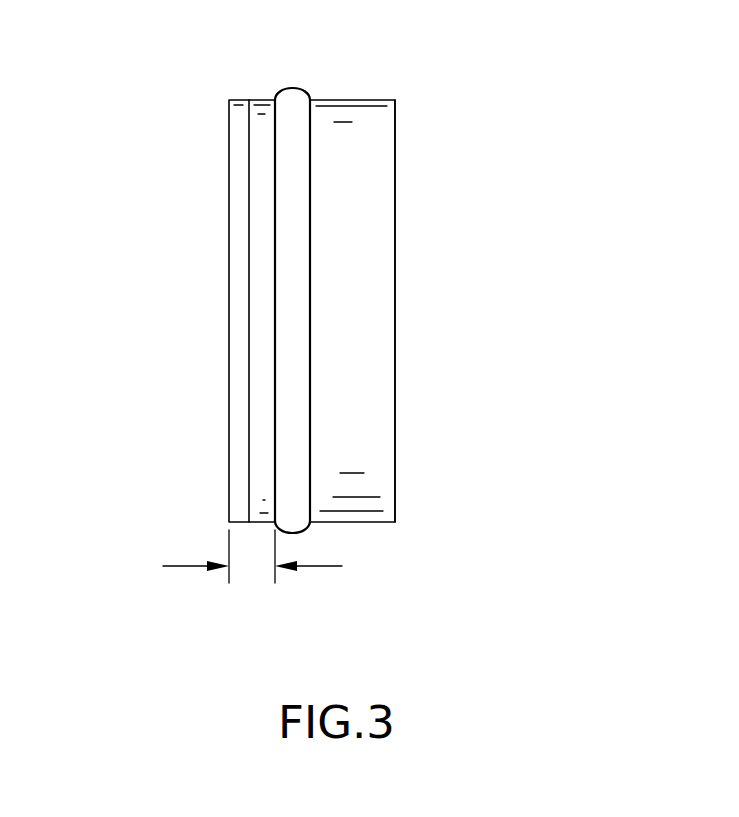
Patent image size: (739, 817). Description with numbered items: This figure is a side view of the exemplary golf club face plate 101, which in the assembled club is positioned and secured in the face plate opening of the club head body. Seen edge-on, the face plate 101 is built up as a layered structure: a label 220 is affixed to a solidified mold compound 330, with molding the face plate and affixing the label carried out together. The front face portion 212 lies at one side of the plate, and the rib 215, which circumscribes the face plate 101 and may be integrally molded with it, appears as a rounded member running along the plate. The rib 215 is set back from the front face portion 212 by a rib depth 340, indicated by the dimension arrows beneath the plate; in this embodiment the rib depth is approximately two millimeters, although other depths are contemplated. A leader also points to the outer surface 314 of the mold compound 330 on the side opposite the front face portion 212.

The face plate 101 is at (298, 302).
The front face portion 212 is at (183, 311).
The rib 215 is at (291, 90).
The label 220 is at (227, 475).
The outer surface of panel 314 is at (418, 222).
The solidified mold compound 330 is at (419, 311).
The rib depth 340 is at (273, 556).